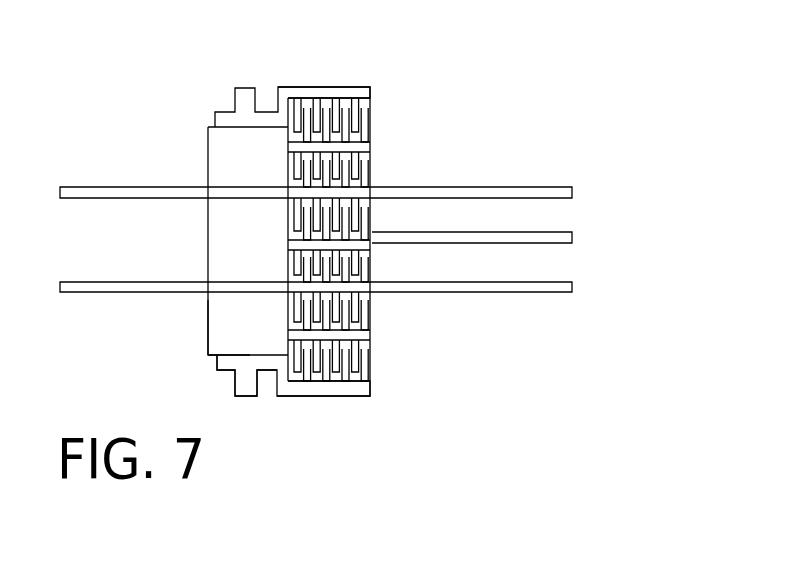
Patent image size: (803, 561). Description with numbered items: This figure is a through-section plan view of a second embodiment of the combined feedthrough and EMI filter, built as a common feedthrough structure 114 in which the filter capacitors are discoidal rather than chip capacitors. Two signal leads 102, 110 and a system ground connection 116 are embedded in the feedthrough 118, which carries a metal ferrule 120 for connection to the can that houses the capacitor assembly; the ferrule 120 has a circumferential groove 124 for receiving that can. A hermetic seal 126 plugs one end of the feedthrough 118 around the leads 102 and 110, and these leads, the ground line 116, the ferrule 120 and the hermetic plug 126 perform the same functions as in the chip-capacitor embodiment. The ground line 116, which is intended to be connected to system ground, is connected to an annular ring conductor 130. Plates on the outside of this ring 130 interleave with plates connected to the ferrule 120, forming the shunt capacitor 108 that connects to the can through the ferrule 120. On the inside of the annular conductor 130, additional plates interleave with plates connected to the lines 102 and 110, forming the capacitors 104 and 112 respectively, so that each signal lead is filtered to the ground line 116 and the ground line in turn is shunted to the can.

The lead 102 is at (553, 190).
The capacitor 104 is at (375, 232).
The shunt capacitor 108 is at (375, 102).
The lead 110 is at (535, 293).
The capacitor 112 is at (375, 250).
The feedthrough structure 114 is at (200, 138).
The system ground connection 116 is at (553, 238).
The feedthrough 118 is at (292, 88).
The metal ferrule 120 is at (336, 397).
The circumferential groove 124 is at (262, 392).
The hermetic seal 126 is at (211, 356).
The annular ring conductor 130 is at (376, 148).